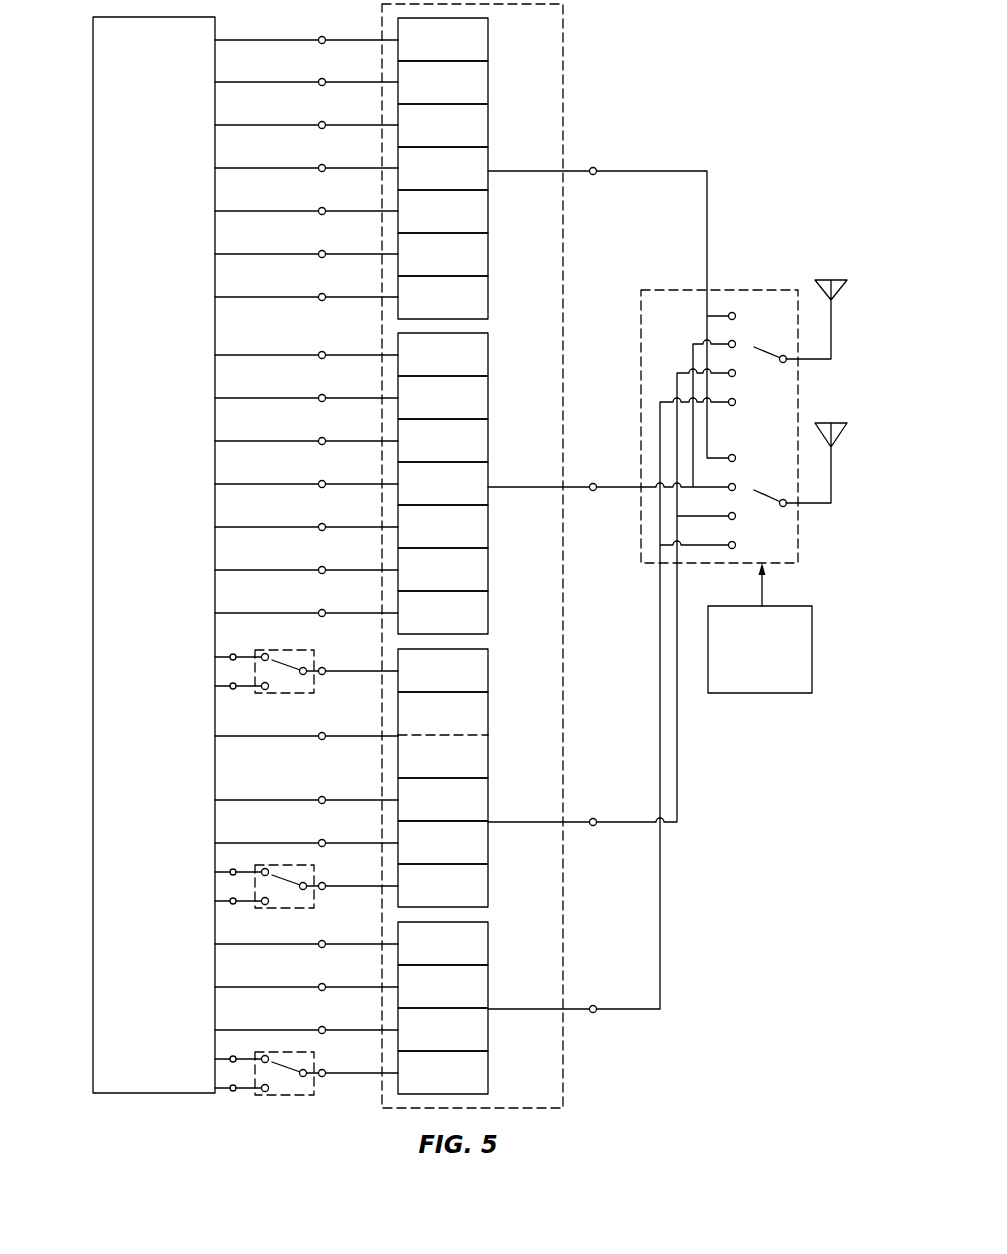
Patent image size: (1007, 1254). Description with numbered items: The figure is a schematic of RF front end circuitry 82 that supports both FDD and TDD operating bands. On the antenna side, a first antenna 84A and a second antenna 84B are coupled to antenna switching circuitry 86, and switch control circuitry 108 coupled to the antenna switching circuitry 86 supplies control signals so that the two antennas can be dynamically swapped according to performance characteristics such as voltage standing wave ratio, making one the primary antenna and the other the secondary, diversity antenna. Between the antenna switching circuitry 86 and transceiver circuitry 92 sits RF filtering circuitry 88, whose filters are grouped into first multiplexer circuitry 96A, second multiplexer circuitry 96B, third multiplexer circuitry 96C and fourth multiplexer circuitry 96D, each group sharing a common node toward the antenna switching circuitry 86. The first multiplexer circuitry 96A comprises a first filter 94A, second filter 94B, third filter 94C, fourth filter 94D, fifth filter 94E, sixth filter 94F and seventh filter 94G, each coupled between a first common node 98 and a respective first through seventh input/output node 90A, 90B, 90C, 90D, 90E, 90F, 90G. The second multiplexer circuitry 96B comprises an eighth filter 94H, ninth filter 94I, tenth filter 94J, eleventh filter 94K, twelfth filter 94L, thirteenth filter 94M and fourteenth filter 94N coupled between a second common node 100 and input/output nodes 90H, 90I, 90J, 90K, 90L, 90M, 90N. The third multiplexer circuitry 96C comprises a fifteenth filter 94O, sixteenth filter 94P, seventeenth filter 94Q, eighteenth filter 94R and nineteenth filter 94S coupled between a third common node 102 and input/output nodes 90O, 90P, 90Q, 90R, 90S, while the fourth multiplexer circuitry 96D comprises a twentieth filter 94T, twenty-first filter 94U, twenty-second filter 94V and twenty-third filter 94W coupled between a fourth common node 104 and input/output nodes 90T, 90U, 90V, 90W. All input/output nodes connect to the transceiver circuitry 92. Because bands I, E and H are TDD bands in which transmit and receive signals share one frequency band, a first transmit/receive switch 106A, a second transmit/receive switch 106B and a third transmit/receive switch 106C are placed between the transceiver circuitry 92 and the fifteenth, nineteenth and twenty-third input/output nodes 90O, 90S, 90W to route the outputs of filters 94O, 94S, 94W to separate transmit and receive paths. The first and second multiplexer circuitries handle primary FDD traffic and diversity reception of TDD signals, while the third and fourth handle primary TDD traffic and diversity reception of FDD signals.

The RF front end circuitry 82 is at (702, 52).
The first antenna 84A is at (835, 280).
The second antenna 84B is at (835, 423).
The antenna switching circuitry 86 is at (772, 554).
The RF filtering circuitry 88 is at (563, 1108).
The first input/output node 90A is at (324, 37).
The second input/output node 90B is at (324, 79).
The third input/output node 90C is at (324, 122).
The fourth input/output node 90D is at (324, 165).
The fifth input/output node 90E is at (324, 208).
The sixth input/output node 90F is at (324, 251).
The seventh input/output node 90G is at (324, 294).
The eighth input/output node 90H is at (324, 352).
The ninth input/output node 90I is at (324, 395).
The tenth input/output node 90J is at (324, 438).
The eleventh input/output node 90K is at (324, 481).
The twelfth input/output node 90L is at (324, 524).
The thirteenth input/output node 90M is at (324, 567).
The fourteenth input/output node 90N is at (324, 610).
The fifteenth input/output node 90O is at (324, 668).
The sixteenth input/output node 90P is at (324, 733).
The seventeenth input/output node 90Q is at (324, 797).
The eighteenth input/output node 90R is at (324, 840).
The nineteenth input/output node 90S is at (324, 883).
The twentieth input/output node 90T is at (324, 941).
The twenty-first input/output node 90U is at (324, 984).
The twenty-second input/output node 90V is at (324, 1027).
The twenty-third input/output node 90W is at (324, 1070).
The transceiver circuitry 92 is at (145, 522).
The first filter 94A is at (489, 31).
The second filter 94B is at (489, 74).
The third filter 94C is at (489, 117).
The fourth filter 94D is at (489, 160).
The fifth filter 94E is at (489, 203).
The sixth filter 94F is at (489, 246).
The seventh filter 94G is at (489, 289).
The eighth filter 94H is at (489, 346).
The ninth filter 94I is at (489, 389).
The tenth filter 94J is at (489, 432).
The eleventh filter 94K is at (489, 475).
The twelfth filter 94L is at (489, 518).
The thirteenth filter 94M is at (489, 561).
The fourteenth filter 94N is at (473, 610).
The fifteenth filter 94O is at (489, 662).
The sixteenth filter 94P is at (489, 705).
The seventeenth filter 94Q is at (489, 791).
The eighteenth filter 94R is at (489, 834).
The nineteenth filter 94S is at (473, 885).
The twentieth filter 94T is at (489, 935).
The twenty-first filter 94U is at (489, 978).
The twenty-second filter 94V is at (489, 1021).
The twenty-third filter 94W is at (573, 1085).
The first multiplexer circuitry 96A is at (502, 172).
The second multiplexer circuitry 96B is at (502, 488).
The third multiplexer circuitry 96C is at (502, 783).
The fourth multiplexer circuitry 96D is at (502, 1009).
The first common node 98 is at (595, 168).
The second common node 100 is at (595, 484).
The third common node 102 is at (595, 819).
The fourth common node 104 is at (595, 1006).
The first transmit/receive switch 106A is at (298, 650).
The second transmit/receive switch 106B is at (298, 908).
The third transmit/receive switch 106C is at (298, 1095).
The switch control circuitry 108 is at (749, 676).